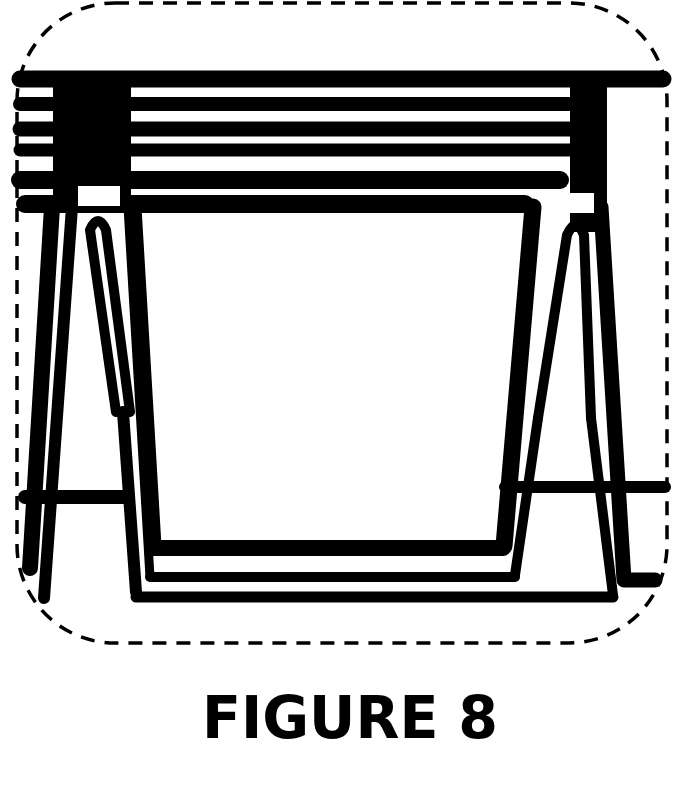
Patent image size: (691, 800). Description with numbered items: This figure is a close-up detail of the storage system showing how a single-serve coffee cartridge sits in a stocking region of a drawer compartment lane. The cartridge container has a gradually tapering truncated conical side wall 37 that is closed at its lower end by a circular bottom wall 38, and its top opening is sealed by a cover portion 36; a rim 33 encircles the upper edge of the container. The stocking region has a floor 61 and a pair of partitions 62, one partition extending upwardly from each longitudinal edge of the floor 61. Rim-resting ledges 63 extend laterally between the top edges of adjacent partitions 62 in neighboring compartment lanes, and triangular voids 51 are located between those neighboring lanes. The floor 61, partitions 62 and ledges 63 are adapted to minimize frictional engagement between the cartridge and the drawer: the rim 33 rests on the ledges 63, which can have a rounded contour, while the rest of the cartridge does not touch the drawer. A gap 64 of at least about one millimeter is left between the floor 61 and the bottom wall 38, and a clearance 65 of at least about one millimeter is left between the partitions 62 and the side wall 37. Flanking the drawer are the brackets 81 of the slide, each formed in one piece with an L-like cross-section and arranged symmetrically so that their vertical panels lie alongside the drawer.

The rim 33 is at (100, 78).
The cover portion 36 is at (313, 152).
The side wall 37 is at (330, 392).
The bottom wall 38 is at (328, 531).
The triangular void 51 is at (342, 402).
The floor 61 is at (374, 589).
The partition 62 is at (126, 375).
The rim-resting ledge 63 is at (336, 302).
The gap 64 is at (136, 470).
The clearance 65 is at (398, 561).
The bracket 81 is at (331, 266).